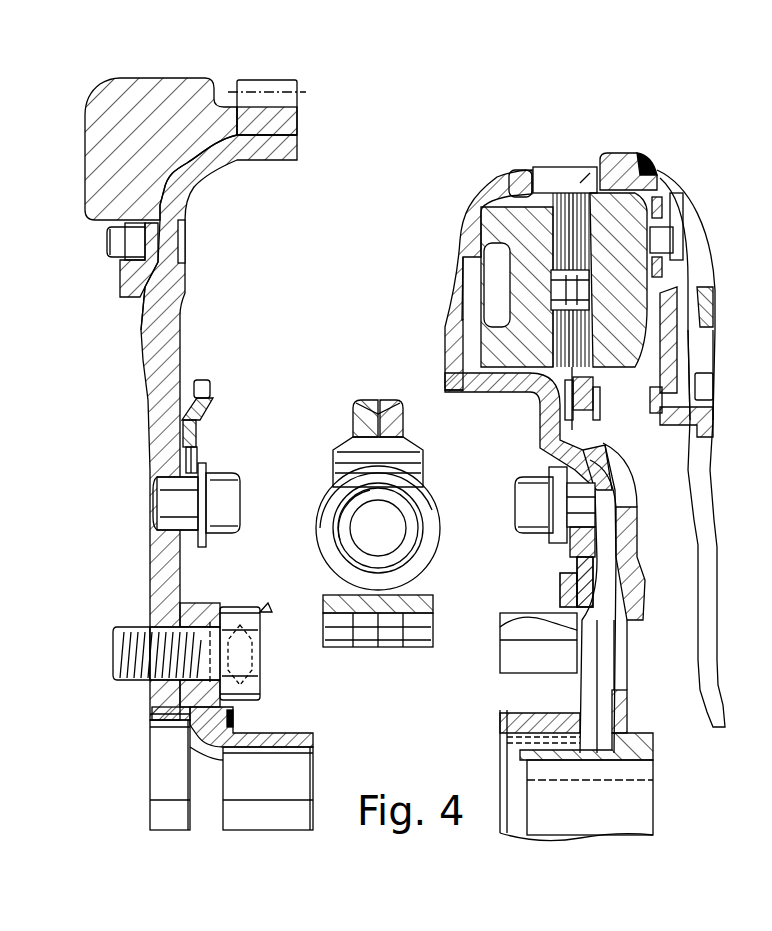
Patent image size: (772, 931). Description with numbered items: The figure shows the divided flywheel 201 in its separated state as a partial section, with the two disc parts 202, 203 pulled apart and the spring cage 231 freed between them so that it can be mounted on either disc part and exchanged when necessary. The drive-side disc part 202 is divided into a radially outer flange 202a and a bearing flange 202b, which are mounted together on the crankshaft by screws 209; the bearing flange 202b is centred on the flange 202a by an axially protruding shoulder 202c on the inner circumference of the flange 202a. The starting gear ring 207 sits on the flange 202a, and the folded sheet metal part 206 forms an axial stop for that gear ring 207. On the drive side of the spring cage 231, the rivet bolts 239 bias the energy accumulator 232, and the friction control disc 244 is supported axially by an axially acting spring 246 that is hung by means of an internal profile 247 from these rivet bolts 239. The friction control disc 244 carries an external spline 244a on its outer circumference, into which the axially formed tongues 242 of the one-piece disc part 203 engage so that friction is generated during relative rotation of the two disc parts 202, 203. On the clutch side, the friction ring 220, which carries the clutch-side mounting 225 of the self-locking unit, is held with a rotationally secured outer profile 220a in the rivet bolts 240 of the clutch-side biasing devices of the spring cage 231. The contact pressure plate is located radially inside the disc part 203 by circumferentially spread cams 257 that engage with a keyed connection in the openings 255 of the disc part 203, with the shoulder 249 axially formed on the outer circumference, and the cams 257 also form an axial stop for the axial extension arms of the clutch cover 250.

The divided flywheel 201 is at (463, 107).
The disc part 202 is at (138, 425).
The radially outer flange 202a is at (153, 369).
The bearing flange 202b is at (210, 740).
The axially protruding shoulder 202c is at (186, 717).
The disc part 203 is at (617, 558).
The folded sheet metal part 206 is at (168, 88).
The starting gear ring 207 is at (292, 122).
The screws 209 is at (120, 638).
The friction ring 220 is at (573, 587).
The outer profile 220a is at (567, 483).
The clutch-side mounting 225 is at (535, 633).
The spring cage 231 is at (430, 447).
The energy accumulator 232 is at (407, 513).
The rivet bolts 239 is at (228, 515).
The rivet bolts 240 is at (535, 525).
The axially formed tongues 242 is at (443, 385).
The friction control disc 244 is at (205, 410).
The external spline 244a is at (205, 390).
The axially acting spring 246 is at (197, 442).
The internal profile 247 is at (193, 462).
The shoulder 249 is at (620, 160).
The clutch cover 250 is at (700, 290).
The openings 255 is at (555, 175).
The cams 257 is at (522, 178).